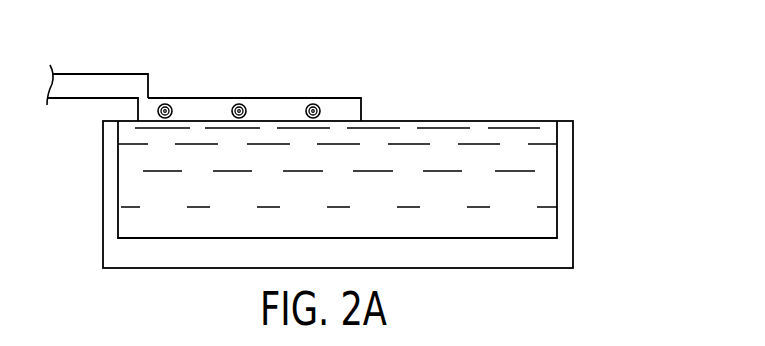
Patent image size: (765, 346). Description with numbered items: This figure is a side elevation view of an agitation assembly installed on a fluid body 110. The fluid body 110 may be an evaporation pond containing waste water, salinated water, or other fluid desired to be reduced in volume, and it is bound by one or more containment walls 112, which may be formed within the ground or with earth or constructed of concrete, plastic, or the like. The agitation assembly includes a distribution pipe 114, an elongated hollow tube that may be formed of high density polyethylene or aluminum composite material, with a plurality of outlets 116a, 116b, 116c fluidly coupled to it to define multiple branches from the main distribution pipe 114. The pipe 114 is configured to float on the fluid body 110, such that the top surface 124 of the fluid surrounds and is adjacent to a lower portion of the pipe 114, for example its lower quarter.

The fluid body 110 is at (511, 215).
The containment walls 112 is at (565, 178).
The distribution pipe 114 is at (91, 86).
The outlet 116a is at (314, 102).
The outlet 116b is at (239, 102).
The outlet 116c is at (164, 102).
The top surface 124 is at (437, 121).